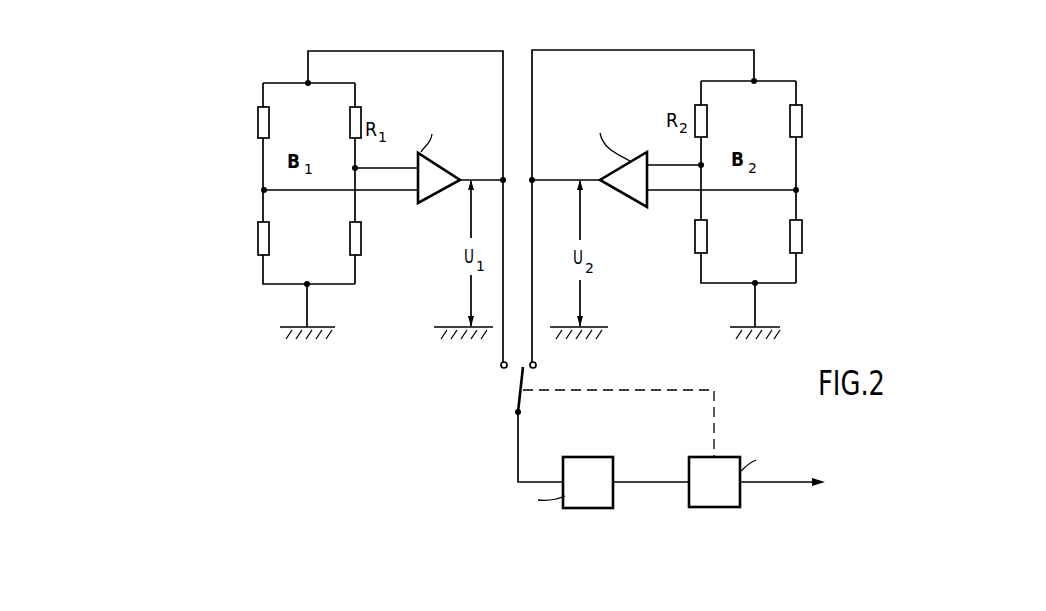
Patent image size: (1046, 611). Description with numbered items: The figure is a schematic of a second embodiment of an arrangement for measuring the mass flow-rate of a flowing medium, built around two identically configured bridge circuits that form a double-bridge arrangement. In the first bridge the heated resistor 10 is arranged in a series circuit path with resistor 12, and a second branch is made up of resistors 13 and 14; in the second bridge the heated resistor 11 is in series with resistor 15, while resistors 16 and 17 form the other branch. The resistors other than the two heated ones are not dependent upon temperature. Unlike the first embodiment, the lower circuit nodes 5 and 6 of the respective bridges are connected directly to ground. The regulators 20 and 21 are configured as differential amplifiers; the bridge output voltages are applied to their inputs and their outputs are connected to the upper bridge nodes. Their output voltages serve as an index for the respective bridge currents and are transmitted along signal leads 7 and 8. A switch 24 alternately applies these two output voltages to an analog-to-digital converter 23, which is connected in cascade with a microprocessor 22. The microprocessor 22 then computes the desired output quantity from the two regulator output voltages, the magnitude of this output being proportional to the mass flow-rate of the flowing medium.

The lower circuit node 5 is at (307, 284).
The lower circuit node 6 is at (755, 285).
The signal lead 7 is at (503, 208).
The signal lead 8 is at (533, 246).
The resistor 10 is at (350, 128).
The resistor 11 is at (707, 120).
The resistor 12 is at (350, 243).
The resistor 13 is at (258, 128).
The resistor 14 is at (258, 244).
The resistor 15 is at (707, 234).
The resistor 16 is at (802, 120).
The resistor 17 is at (802, 234).
The regulator 20 is at (436, 165).
The regulator 21 is at (630, 197).
The microprocessor 22 is at (730, 472).
The analog-to-digital converter 23 is at (583, 470).
The switch 24 is at (508, 379).